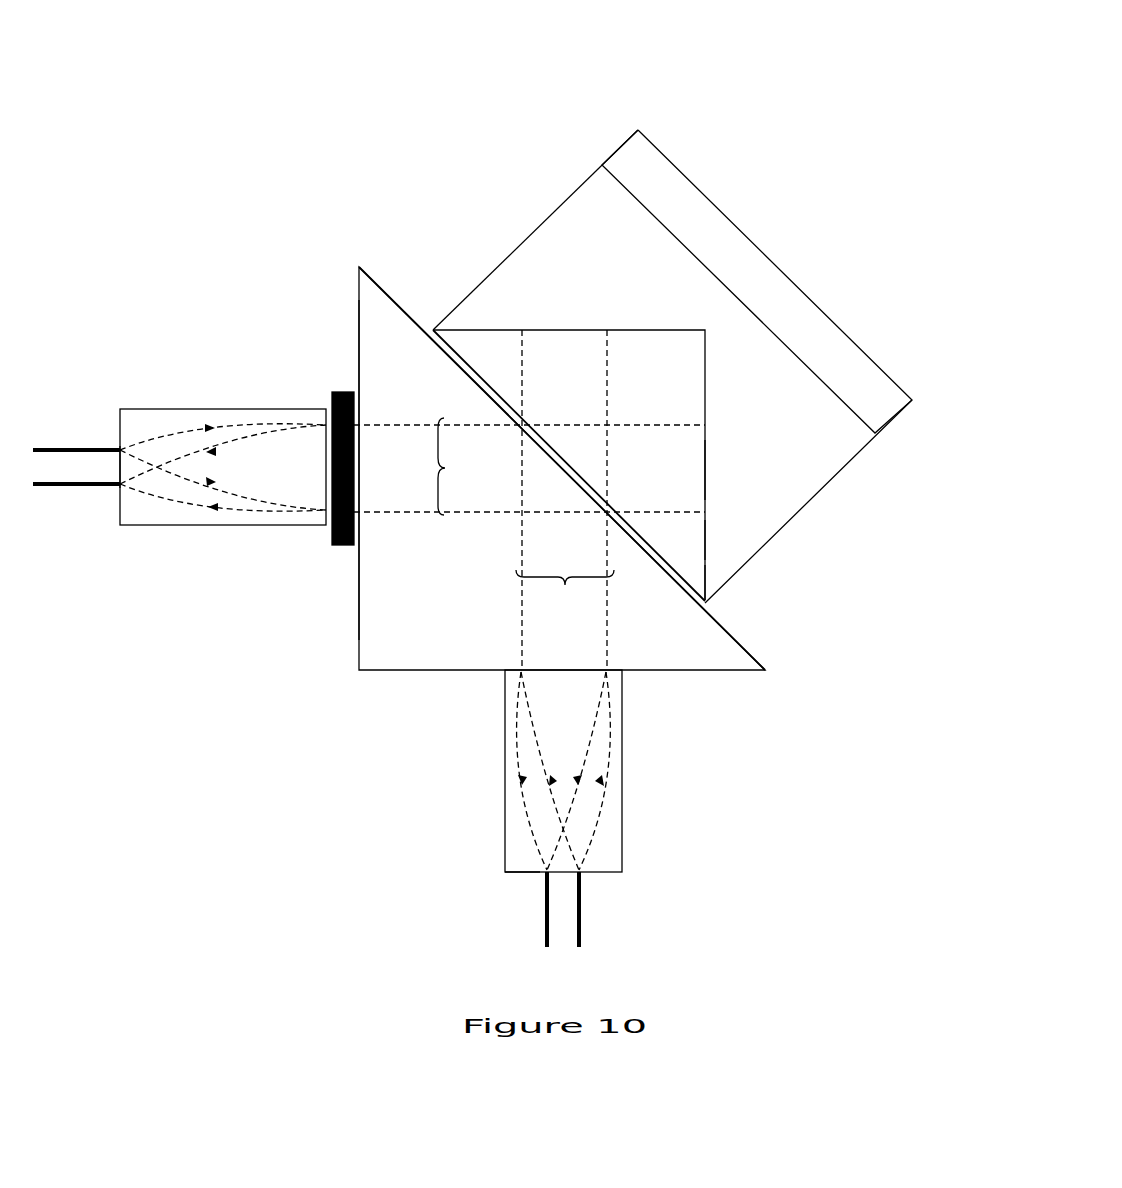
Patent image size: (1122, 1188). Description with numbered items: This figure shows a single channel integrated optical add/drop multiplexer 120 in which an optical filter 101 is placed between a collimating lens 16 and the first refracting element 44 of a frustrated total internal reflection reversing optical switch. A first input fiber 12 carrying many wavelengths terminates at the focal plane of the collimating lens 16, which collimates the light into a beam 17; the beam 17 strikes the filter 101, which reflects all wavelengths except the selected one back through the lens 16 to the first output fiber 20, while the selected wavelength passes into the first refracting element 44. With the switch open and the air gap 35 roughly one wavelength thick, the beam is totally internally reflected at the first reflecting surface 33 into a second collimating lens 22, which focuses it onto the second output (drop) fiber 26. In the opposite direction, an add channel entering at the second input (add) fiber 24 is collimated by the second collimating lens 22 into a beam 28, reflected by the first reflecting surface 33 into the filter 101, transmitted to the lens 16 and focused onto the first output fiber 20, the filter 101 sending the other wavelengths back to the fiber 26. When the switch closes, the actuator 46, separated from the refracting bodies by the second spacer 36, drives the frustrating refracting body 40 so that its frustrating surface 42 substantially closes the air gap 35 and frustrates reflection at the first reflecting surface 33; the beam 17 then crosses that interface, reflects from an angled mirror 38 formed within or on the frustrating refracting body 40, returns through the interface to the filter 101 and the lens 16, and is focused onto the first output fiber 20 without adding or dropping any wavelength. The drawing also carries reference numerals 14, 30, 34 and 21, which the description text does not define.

The single channel integrated optical add/drop multiplexer 120 is at (727, 82).
The first input fiber 12 is at (65, 443).
The first output fiber 20 is at (72, 476).
The fiber end face 14 is at (118, 448).
The collimating lens 16 is at (208, 407).
The optical filter 101 is at (341, 547).
The prism entrance face 30 is at (357, 380).
The first total internal reflecting surface 33 is at (419, 322).
The optical block 34 is at (585, 329).
The air gap 35 is at (702, 603).
The second spacer 36 is at (805, 440).
The angled mirror 38 is at (707, 463).
The frustrating refracting body 40 is at (690, 540).
The frustrating surface 42 is at (688, 573).
The first refracting element 44 is at (398, 648).
The actuator 46 is at (697, 220).
The collimated beam 17 is at (459, 466).
The collimated beam 28 is at (565, 587).
The second collimating lens 22 is at (622, 788).
The lens end face 21 is at (527, 878).
The second output (drop) fiber 26 is at (554, 934).
The second input (add) fiber 24 is at (590, 936).